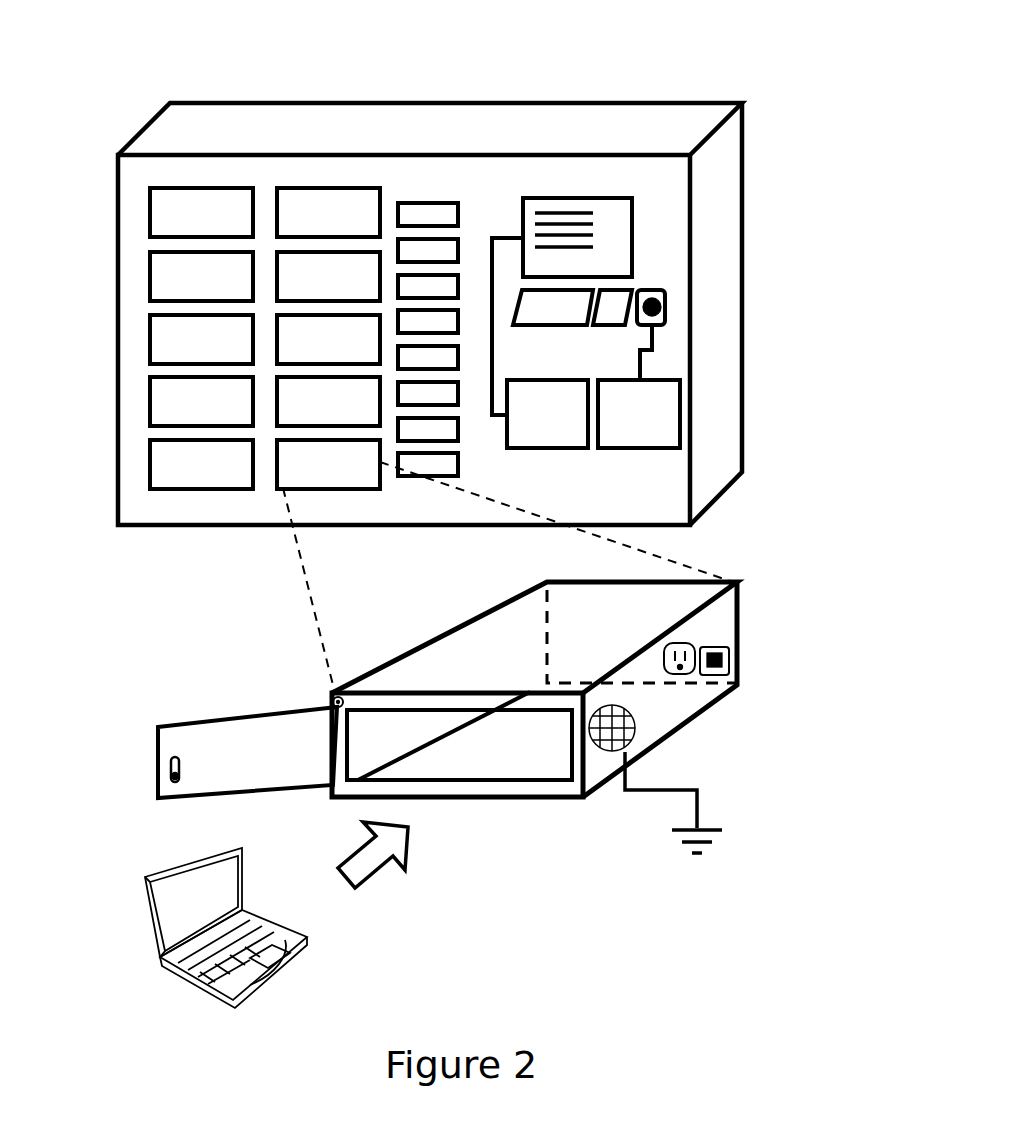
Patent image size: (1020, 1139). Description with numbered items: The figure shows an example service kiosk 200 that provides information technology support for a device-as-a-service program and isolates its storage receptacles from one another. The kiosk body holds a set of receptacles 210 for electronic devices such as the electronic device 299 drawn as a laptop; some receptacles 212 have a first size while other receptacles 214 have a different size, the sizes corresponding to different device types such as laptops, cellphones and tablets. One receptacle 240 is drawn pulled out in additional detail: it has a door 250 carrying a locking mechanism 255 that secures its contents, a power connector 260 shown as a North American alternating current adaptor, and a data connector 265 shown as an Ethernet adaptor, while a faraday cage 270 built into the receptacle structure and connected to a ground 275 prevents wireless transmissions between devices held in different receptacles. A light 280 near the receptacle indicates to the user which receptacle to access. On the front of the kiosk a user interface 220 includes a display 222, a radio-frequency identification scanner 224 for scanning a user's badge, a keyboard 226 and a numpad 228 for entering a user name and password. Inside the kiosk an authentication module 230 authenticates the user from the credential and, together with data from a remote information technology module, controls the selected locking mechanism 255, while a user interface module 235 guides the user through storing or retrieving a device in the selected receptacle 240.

The service kiosk 200 is at (548, 103).
The set of receptacles 210 is at (238, 252).
The receptacles having a first size 212 is at (375, 86).
The receptacles having a different size 214 is at (458, 86).
The user interface 220 is at (714, 310).
The display 222 is at (632, 237).
The radio-frequency identification scanner 224 is at (665, 308).
The keyboard 226 is at (610, 325).
The numpad 228 is at (552, 325).
The authentication module 230 is at (664, 432).
The user interface module 235 is at (573, 432).
The receptacle 240 is at (527, 797).
The door 250 is at (255, 718).
The locking mechanism 255 is at (167, 773).
The power connector 260 is at (680, 643).
The data connector 265 is at (729, 660).
The faraday cage 270 is at (635, 733).
The ground connection 275 is at (697, 800).
The light 280 is at (333, 700).
The electronic device 299 is at (307, 927).